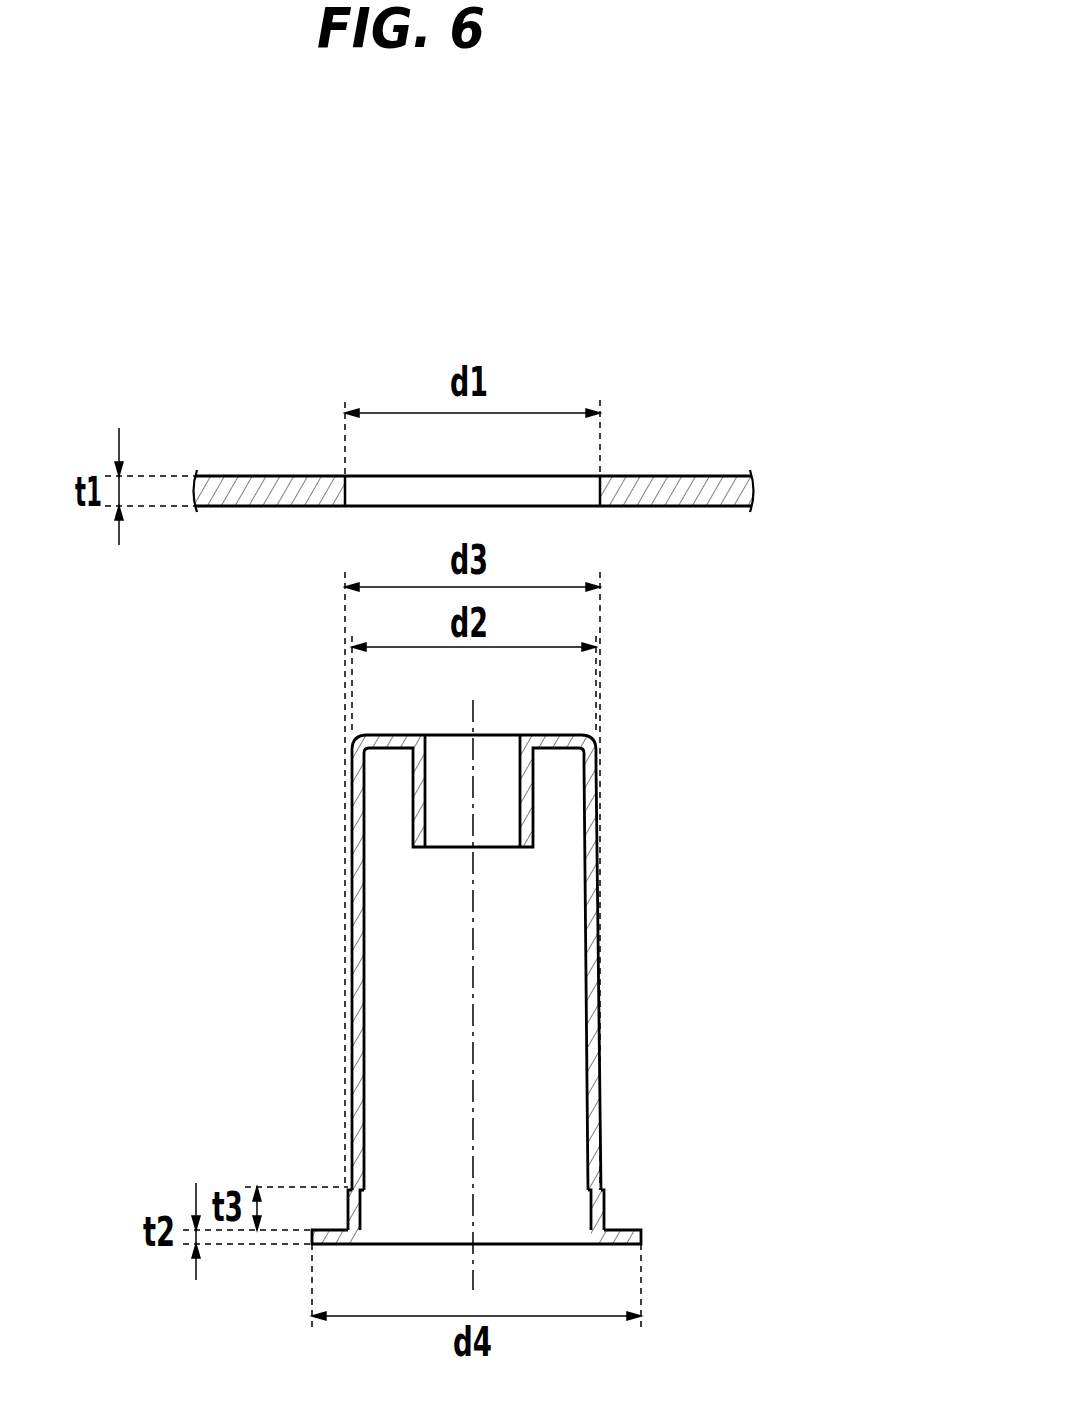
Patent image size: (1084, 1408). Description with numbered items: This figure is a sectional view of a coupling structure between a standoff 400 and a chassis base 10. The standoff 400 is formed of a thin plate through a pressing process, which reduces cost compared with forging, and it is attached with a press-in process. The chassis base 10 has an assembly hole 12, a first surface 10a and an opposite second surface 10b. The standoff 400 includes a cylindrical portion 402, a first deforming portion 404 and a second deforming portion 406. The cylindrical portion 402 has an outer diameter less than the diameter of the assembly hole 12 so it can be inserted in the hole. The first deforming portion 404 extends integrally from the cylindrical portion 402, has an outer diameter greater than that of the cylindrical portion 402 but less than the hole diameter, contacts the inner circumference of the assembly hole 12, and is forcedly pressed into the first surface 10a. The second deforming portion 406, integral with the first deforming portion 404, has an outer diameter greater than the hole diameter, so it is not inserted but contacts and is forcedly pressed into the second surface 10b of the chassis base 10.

The chassis base 10 is at (880, 438).
The first surface of the chassis base 10a is at (698, 476).
The second surface of the chassis base 10b is at (698, 506).
The assembly hole 12 is at (517, 490).
The standoff 400 is at (758, 1005).
The cylindrical portion 402 is at (590, 1014).
The first deforming portion 404 is at (601, 1203).
The second deforming portion 406 is at (618, 1232).